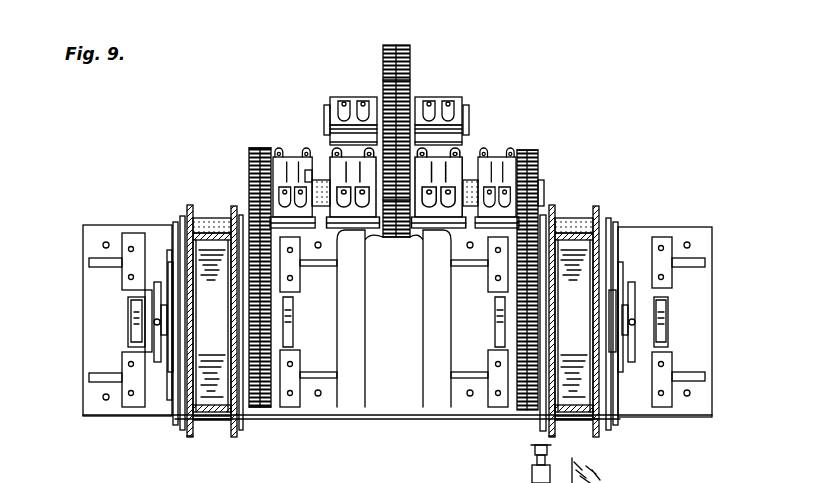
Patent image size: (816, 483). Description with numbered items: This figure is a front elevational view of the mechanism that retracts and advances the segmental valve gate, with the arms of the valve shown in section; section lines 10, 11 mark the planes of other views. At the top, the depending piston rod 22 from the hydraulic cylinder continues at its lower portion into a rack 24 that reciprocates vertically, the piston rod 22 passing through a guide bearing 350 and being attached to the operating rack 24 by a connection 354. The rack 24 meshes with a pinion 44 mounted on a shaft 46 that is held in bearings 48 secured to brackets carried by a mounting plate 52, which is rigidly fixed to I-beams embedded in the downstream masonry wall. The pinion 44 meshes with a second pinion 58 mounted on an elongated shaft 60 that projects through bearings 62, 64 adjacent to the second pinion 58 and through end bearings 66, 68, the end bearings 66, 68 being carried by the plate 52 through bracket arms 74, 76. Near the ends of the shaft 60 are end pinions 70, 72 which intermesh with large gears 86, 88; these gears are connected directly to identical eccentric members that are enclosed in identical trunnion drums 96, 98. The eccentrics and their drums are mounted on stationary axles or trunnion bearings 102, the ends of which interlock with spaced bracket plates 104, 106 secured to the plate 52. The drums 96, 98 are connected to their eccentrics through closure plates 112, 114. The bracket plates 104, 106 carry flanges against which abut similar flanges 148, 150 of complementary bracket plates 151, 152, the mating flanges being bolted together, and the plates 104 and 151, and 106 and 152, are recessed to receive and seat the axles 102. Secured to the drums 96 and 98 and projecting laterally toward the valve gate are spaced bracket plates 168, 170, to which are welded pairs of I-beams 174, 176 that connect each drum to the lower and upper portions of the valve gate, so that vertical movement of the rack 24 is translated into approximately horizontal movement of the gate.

The section line 10 is at (296, 475).
The section line 11 is at (468, 482).
The piston rod 22 is at (532, 447).
The rack 24 is at (410, 64).
The pinion 44 is at (383, 90).
The shaft 46 is at (324, 116).
The bearings 48 is at (350, 97).
The mounting plate 52 is at (706, 237).
The second pinion 58 is at (400, 240).
The elongated shaft 60 is at (280, 176).
The bearing 62 is at (450, 166).
The bearing 64 is at (342, 170).
The end bearing 66 is at (496, 172).
The end bearing 68 is at (272, 148).
The end pinion 70 is at (540, 158).
The end pinion 72 is at (252, 150).
The bracket arm 74 is at (540, 206).
The bracket arm 76 is at (270, 210).
The large gear 86 is at (488, 266).
The large gear 88 is at (258, 410).
The trunnion drum 96 is at (574, 321).
The trunnion drum 98 is at (212, 321).
The stationary axles 102 is at (131, 320).
The bracket plate 104 is at (451, 373).
The bracket plate 106 is at (106, 383).
The closure plate 112 is at (184, 236).
The closure plate 114 is at (148, 290).
The flange 148 is at (300, 366).
The flange 150 is at (122, 238).
The complementary bracket plate 151 is at (284, 292).
The complementary bracket plate 152 is at (128, 283).
The bracket plate 168 is at (610, 218).
The bracket plate 170 is at (176, 222).
The I-beams 174 is at (187, 436).
The I-beams 176 is at (182, 216).
The guide bearing 350 is at (214, 420).
The connection 354 is at (532, 468).